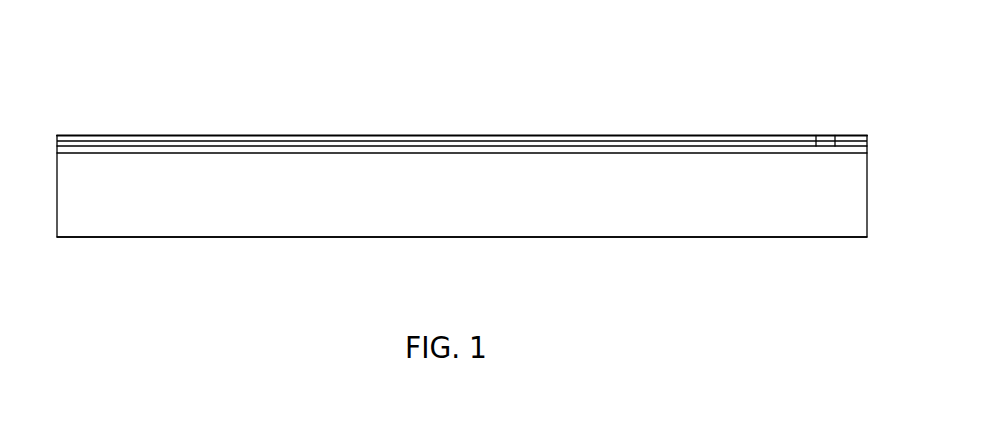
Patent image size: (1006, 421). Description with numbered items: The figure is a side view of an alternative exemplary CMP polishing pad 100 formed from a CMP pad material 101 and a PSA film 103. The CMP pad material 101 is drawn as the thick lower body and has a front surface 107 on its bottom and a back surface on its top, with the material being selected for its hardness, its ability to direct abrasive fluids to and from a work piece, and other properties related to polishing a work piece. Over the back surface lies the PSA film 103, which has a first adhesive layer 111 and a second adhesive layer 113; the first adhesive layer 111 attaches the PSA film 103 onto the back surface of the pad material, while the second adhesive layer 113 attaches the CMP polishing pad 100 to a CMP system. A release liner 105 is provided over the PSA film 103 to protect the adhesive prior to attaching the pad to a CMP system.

The CMP polishing pad 100 is at (142, 74).
The CMP pad material 101 is at (867, 208).
The PSA film 103 is at (868, 147).
The release liner 105 is at (867, 136).
The front surface 107 is at (847, 237).
The first adhesive layer 111 is at (835, 136).
The second adhesive layer 113 is at (816, 136).